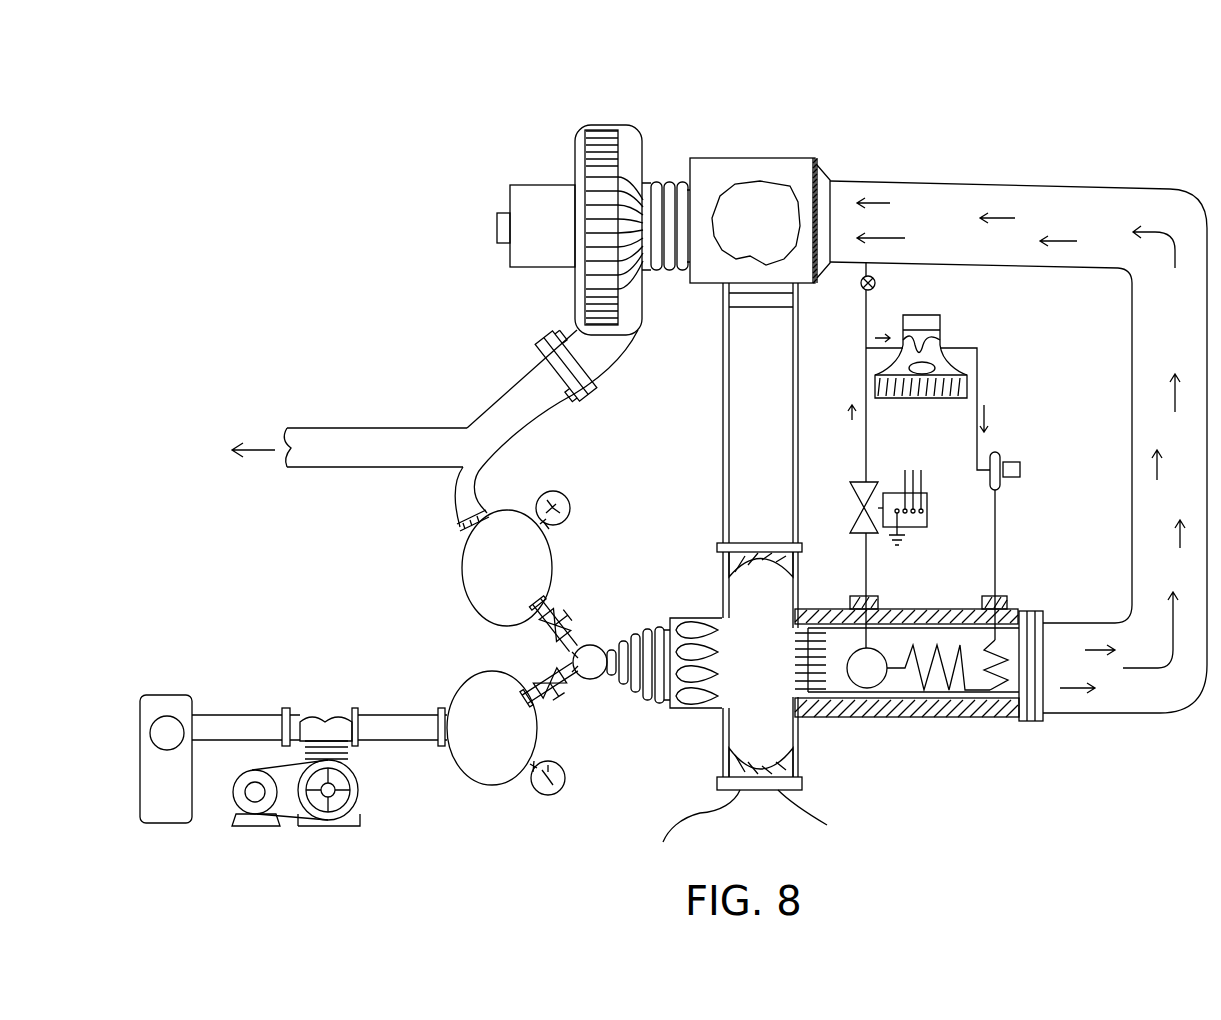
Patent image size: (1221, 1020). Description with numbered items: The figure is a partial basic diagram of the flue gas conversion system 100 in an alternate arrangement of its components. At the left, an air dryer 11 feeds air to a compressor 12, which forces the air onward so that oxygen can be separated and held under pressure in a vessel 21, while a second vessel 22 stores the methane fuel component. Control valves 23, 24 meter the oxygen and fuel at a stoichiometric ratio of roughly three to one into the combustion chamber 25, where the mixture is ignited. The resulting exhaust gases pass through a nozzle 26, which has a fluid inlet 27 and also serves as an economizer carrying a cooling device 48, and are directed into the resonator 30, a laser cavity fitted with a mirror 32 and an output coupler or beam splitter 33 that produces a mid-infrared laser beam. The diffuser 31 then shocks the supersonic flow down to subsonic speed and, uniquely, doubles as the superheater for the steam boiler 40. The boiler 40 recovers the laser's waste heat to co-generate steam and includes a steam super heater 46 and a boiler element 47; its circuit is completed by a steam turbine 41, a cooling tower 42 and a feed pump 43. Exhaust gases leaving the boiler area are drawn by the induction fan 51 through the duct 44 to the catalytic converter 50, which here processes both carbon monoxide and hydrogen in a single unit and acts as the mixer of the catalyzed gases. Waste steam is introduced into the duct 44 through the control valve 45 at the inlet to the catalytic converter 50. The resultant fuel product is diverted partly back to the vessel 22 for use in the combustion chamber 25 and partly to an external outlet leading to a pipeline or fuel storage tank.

The flue gas conversion system 100 is at (252, 105).
The air dryer 11 is at (168, 698).
The compressor 12 is at (314, 719).
The vessel 21 is at (488, 793).
The vessel 22 is at (468, 614).
The control valve 23 is at (560, 702).
The control valve 24 is at (570, 610).
The combustion chamber 25 is at (598, 645).
The nozzle 26 is at (661, 705).
The fluid inlet 27 is at (574, 662).
The resonator 30 is at (613, 846).
The diffuser 31 is at (800, 704).
The mirror 32 is at (802, 840).
The output coupler 33 is at (745, 562).
The steam boiler 40 is at (903, 730).
The steam turbine 41 is at (850, 487).
The cooling tower 42 is at (940, 333).
The feed pump 43 is at (1020, 469).
The duct 44 is at (1140, 715).
The control valve 45 is at (876, 284).
The steam super heater 46 is at (860, 650).
The boiler element 47 is at (930, 648).
The cooling device 48 is at (684, 738).
The catalytic converter 50 is at (771, 158).
The induction fan 51 is at (575, 150).